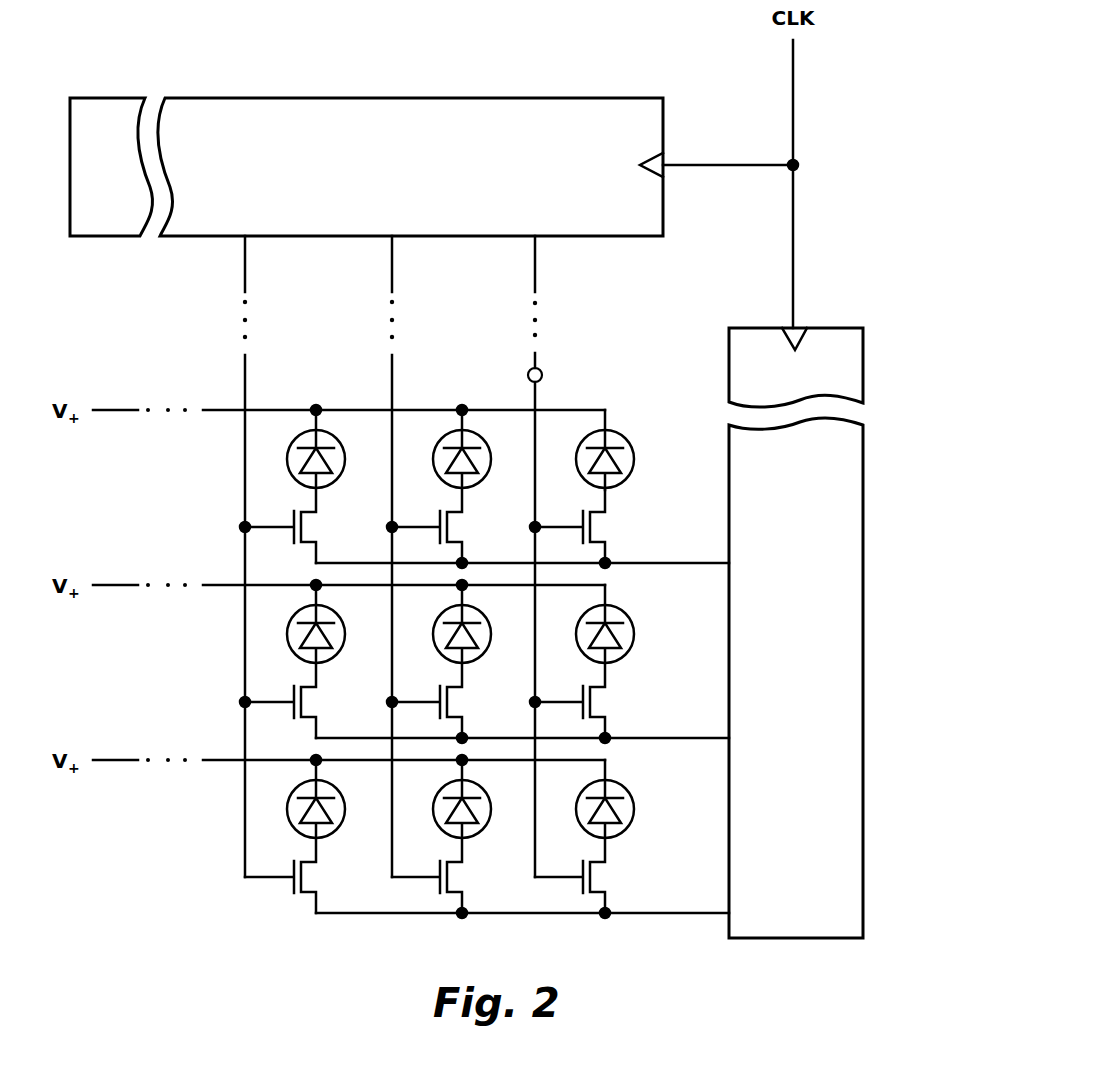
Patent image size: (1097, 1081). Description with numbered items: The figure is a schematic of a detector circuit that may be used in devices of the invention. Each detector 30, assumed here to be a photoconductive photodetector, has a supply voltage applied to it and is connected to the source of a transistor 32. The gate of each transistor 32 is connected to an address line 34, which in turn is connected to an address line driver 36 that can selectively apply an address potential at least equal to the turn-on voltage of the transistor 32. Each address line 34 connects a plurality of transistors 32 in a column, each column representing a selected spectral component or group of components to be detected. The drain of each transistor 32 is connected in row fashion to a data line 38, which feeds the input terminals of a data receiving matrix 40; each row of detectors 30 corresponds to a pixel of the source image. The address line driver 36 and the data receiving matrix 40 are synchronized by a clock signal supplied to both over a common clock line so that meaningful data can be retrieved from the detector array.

The detector 30 is at (618, 433).
The transistor 32 is at (598, 538).
The address line 34 is at (540, 367).
The address line driver 36 is at (495, 97).
The data line 38 is at (645, 562).
The data receiving matrix 40 is at (726, 343).